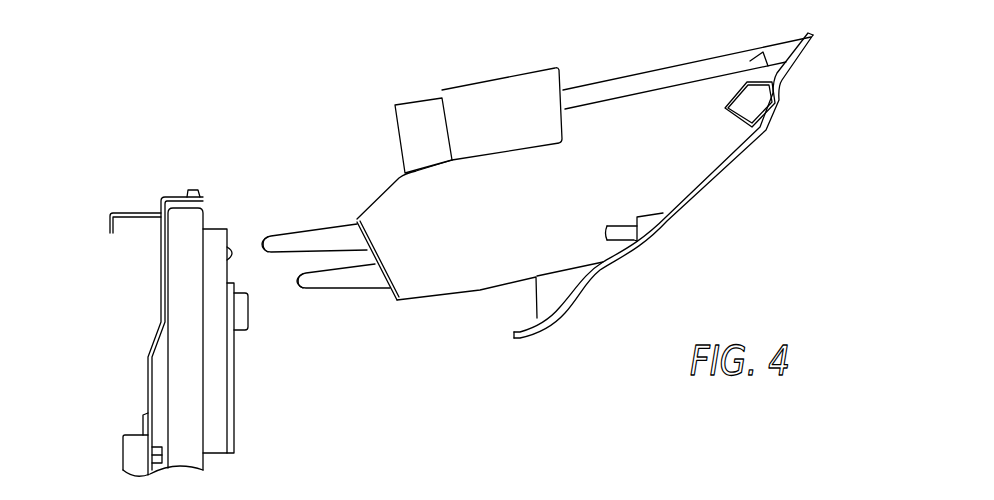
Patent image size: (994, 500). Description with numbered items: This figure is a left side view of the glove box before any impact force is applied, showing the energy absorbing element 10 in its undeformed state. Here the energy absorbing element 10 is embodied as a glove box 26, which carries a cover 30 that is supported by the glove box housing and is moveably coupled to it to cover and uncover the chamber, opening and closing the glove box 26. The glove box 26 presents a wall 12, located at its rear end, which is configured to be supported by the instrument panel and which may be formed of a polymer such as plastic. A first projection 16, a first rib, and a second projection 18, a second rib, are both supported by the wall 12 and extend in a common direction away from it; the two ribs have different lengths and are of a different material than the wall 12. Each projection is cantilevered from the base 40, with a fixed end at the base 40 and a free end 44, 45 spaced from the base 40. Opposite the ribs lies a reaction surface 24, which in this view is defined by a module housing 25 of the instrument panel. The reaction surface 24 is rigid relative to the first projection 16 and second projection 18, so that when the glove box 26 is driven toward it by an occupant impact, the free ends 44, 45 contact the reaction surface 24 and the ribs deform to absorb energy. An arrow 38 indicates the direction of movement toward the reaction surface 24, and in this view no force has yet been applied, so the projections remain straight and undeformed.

The energy absorbing element 10 is at (211, 151).
The wall 12 is at (397, 303).
The first projection 16 is at (320, 237).
The second projection 18 is at (330, 283).
The reaction surface 24 is at (233, 257).
The module housing 25 is at (185, 393).
The glove box 26 is at (520, 224).
The cover 30 is at (708, 187).
The insertion direction 38 is at (323, 330).
The base 40 is at (387, 299).
The free end of first projection 44 is at (262, 244).
The free end of second projection 45 is at (300, 279).